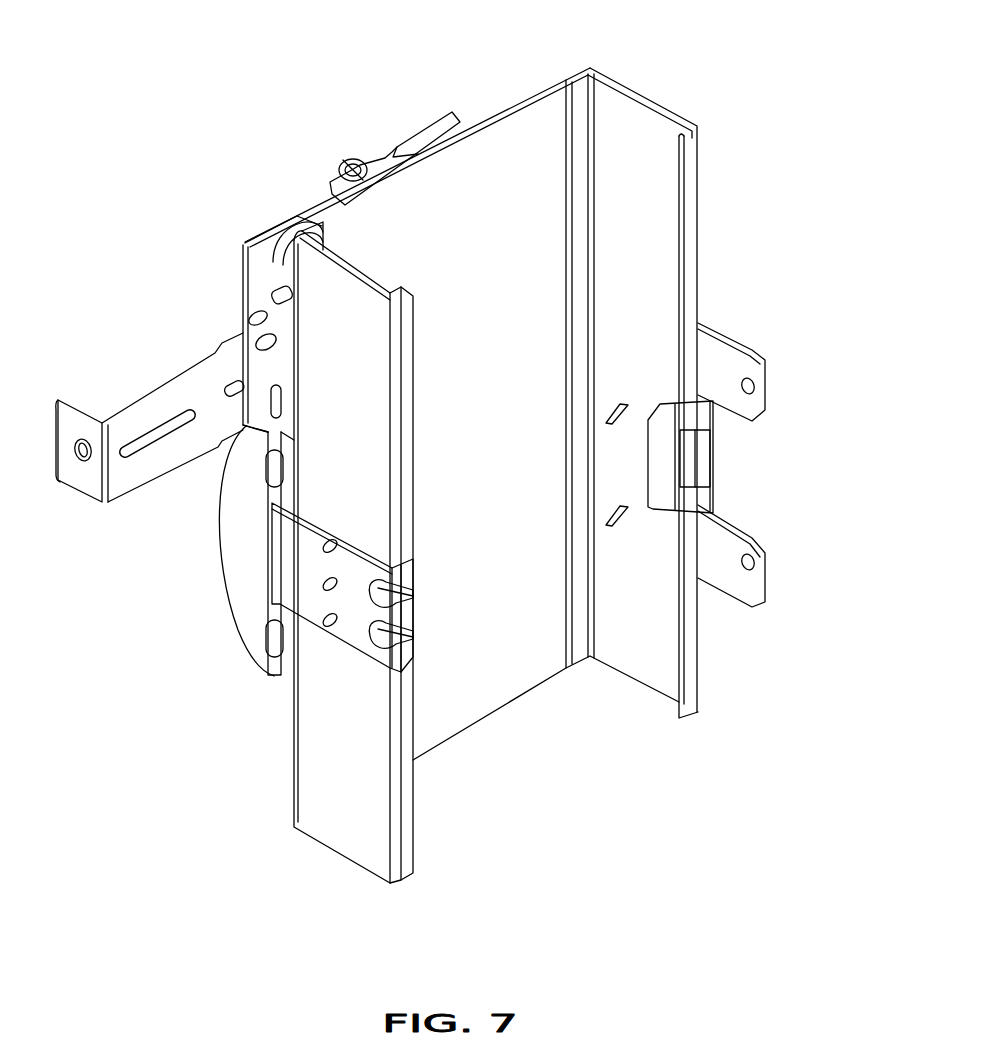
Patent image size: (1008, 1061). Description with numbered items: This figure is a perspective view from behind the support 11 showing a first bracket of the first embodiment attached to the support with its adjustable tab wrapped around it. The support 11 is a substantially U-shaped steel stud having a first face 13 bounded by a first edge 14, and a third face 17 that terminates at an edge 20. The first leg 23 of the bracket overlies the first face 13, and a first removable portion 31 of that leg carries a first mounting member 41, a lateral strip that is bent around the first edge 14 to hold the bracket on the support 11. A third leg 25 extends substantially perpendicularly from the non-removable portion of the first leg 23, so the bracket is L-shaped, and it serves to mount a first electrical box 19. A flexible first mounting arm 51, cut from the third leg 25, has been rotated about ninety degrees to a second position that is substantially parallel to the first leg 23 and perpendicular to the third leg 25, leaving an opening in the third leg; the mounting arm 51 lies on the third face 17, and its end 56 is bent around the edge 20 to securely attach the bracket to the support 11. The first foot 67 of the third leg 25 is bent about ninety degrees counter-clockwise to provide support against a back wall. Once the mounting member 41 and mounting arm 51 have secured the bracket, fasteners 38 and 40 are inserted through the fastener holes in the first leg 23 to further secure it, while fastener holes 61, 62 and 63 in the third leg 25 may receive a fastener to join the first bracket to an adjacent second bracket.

The support 11 is at (590, 68).
The first face 13 is at (652, 103).
The first edge 14 is at (700, 212).
The third face 17 is at (340, 810).
The first electrical box 19 is at (445, 132).
The edge of the third face 20 is at (413, 838).
The first leg 23 is at (738, 328).
The third leg 25 is at (226, 625).
The first removable portion 31 is at (780, 556).
The fastener 38 is at (618, 526).
The fastener 40 is at (613, 402).
The first mounting member 41 is at (650, 390).
The first mounting arm 51 is at (318, 505).
The end of the mounting arm 56 is at (420, 606).
The fastener hole 61 is at (330, 626).
The fastener hole 62 is at (337, 581).
The fastener hole 63 is at (336, 542).
The first foot 67 is at (220, 546).